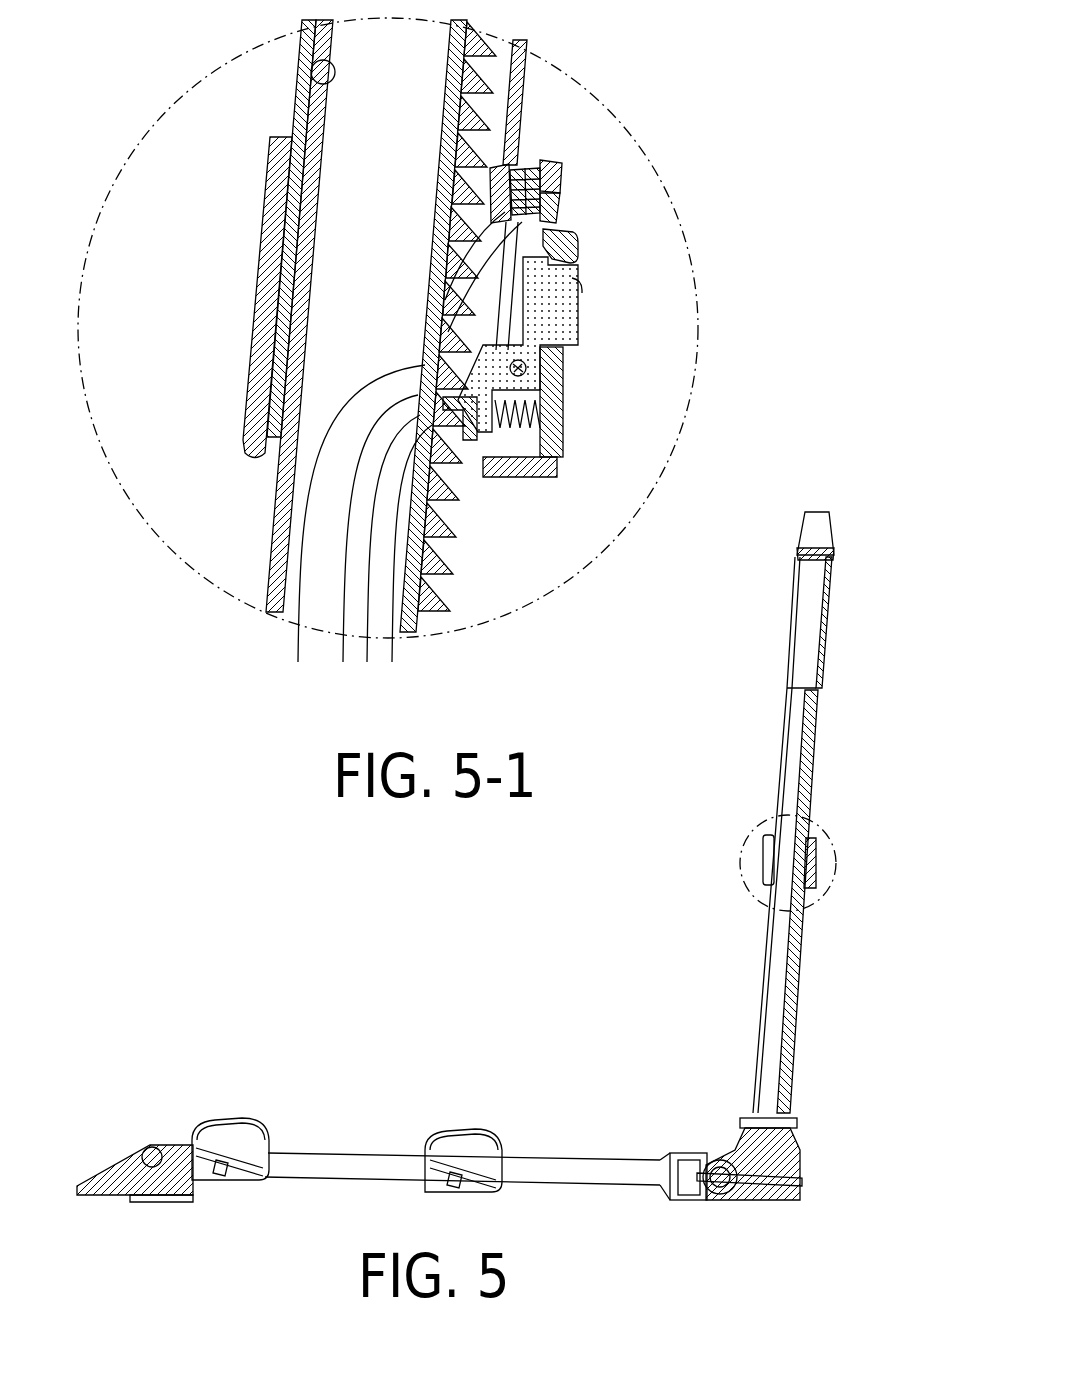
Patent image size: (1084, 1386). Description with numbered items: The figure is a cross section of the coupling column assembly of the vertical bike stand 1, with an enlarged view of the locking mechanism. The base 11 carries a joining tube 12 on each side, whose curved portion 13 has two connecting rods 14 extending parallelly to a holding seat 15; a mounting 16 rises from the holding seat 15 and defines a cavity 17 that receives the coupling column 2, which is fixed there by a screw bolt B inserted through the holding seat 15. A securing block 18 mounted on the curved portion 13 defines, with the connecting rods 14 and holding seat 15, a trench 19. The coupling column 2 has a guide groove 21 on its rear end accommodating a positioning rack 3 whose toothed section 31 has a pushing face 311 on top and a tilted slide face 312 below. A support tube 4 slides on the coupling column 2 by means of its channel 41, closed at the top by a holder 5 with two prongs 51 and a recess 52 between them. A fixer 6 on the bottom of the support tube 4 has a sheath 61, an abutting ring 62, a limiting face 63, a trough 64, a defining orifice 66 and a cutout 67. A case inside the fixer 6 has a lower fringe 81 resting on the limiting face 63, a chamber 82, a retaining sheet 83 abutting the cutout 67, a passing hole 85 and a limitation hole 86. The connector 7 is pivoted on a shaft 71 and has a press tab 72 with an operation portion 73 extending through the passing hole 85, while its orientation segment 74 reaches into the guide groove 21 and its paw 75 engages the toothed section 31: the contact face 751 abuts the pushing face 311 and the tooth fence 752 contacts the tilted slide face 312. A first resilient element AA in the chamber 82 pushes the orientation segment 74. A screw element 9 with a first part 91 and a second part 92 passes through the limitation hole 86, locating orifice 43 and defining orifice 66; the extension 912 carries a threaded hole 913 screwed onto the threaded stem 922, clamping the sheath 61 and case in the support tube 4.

In FIG. 5, the vertical bike stand 1 is at (150, 947).
In FIG. 5-1, the coupling column 2 is at (268, 548).
In FIG. 5, the coupling column 2 is at (755, 1060).
In FIG. 5-1, the positioning rack 3 is at (465, 550).
In FIG. 5-1, the support tube 4 is at (300, 100).
In FIG. 5, the support tube 4 is at (822, 680).
In FIG. 5, the holder 5 is at (833, 555).
In FIG. 5-1, the fixer 6 is at (265, 214).
In FIG. 5, the fixer 6 is at (789, 861).
In FIG. 5-1, the connector 7 is at (579, 334).
In FIG. 5-1, the screw element 9 is at (575, 205).
In FIG. 5, the base 11 is at (330, 1150).
In FIG. 5, the joining tube 12 is at (215, 1052).
In FIG. 5, the curved portion 13 is at (148, 1148).
In FIG. 5, the connecting rods 14 is at (240, 1125).
In FIG. 5, the holding seat 15 is at (672, 1158).
In FIG. 5, the mounting 16 is at (750, 1135).
In FIG. 5, the cavity 17 is at (762, 1190).
In FIG. 5, the securing block 18 is at (100, 1172).
In FIG. 5, the trench 19 is at (395, 1150).
In FIG. 5-1, the guide groove 21 is at (443, 626).
In FIG. 5-1, the toothed section 31 is at (546, 490).
In FIG. 5-1, the channel 41 is at (315, 65).
In FIG. 5-1, the locating orifice 43 is at (490, 195).
In FIG. 5, the prongs 51 is at (826, 520).
In FIG. 5, the recess 52 is at (800, 552).
In FIG. 5-1, the sheath 61 is at (270, 280).
In FIG. 5-1, the abutting ring 62 is at (265, 445).
In FIG. 5-1, the limiting face 63 is at (552, 478).
In FIG. 5-1, the trough 64 is at (472, 290).
In FIG. 5-1, the defining orifice 66 is at (470, 335).
In FIG. 5-1, the cutout 67 is at (522, 165).
In FIG. 5-1, the shaft 71 is at (527, 368).
In FIG. 5-1, the press tab 72 is at (581, 258).
In FIG. 5-1, the operation portion 73 is at (565, 302).
In FIG. 5-1, the orientation segment 74 is at (297, 662).
In FIG. 5-1, the paw 75 is at (370, 663).
In FIG. 5-1, the lower fringe 81 is at (560, 470).
In FIG. 5-1, the chamber 82 is at (525, 447).
In FIG. 5-1, the retaining sheet 83 is at (566, 190).
In FIG. 5-1, the passing hole 85 is at (583, 283).
In FIG. 5-1, the limitation hole 86 is at (485, 245).
In FIG. 5-1, the first part 91 is at (510, 190).
In FIG. 5-1, the second part 92 is at (573, 200).
In FIG. 5-1, the pushing face 311 is at (465, 505).
In FIG. 5-1, the tilted slide face 312 is at (470, 482).
In FIG. 5-1, the contact face 751 is at (394, 640).
In FIG. 5-1, the tooth fence 752 is at (342, 640).
In FIG. 5-1, the extension 912 is at (506, 165).
In FIG. 5-1, the threaded hole 913 is at (503, 200).
In FIG. 5-1, the threaded stem 922 is at (570, 212).
In FIG. 5-1, the first resilient element AA is at (565, 398).
In FIG. 5, the screw bolt B is at (800, 1123).